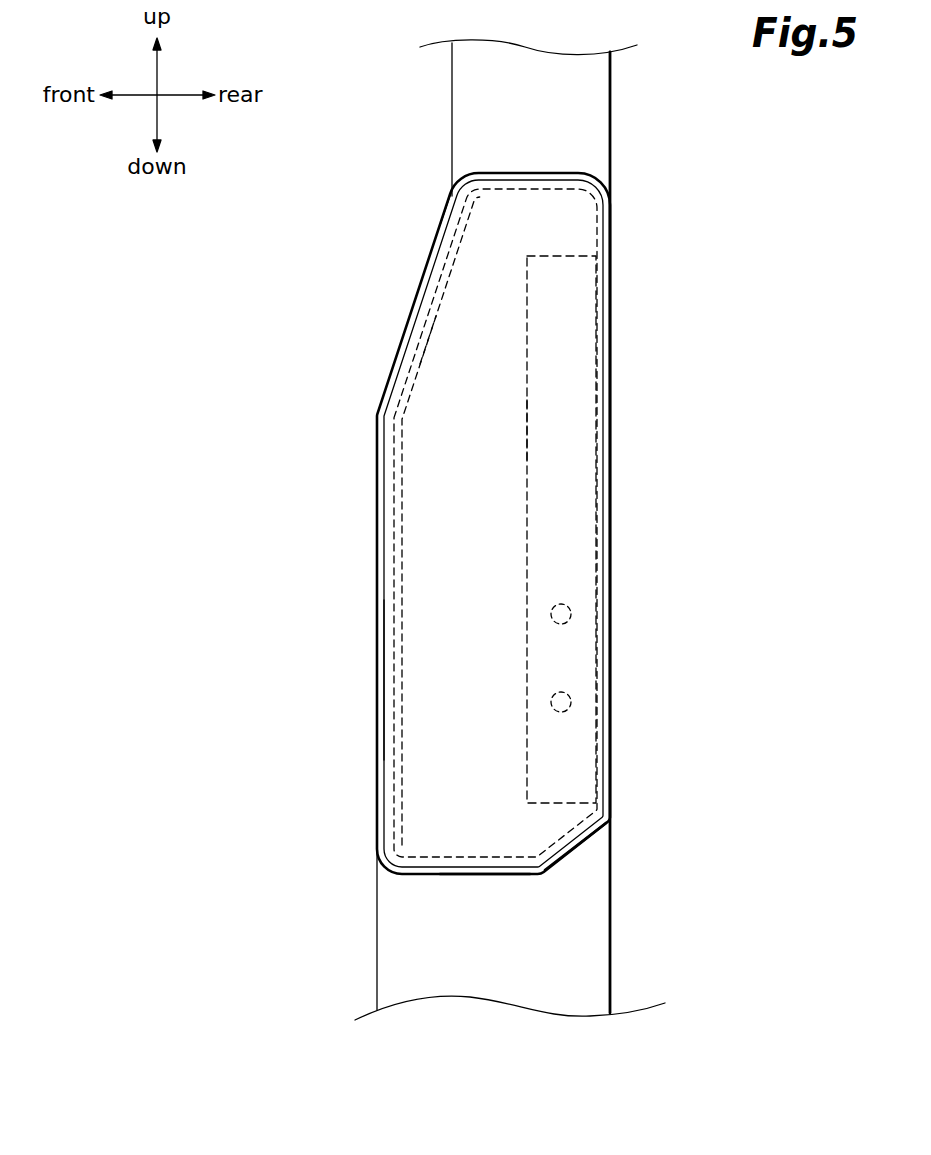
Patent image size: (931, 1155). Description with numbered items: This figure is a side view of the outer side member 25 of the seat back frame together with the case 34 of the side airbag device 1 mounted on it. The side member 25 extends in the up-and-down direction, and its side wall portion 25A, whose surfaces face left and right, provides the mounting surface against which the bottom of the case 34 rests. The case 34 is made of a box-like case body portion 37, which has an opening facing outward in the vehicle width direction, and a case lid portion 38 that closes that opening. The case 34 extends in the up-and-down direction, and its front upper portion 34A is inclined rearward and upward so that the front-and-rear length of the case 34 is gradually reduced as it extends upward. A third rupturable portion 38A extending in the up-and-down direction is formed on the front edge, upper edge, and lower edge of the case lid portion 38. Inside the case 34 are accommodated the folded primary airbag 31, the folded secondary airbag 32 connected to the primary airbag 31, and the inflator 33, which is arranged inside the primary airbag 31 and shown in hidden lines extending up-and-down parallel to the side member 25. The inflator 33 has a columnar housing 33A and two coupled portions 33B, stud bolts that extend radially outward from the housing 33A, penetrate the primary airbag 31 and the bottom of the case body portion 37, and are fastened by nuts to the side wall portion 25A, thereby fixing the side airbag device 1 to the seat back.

The side airbag device 1 is at (568, 173).
The side member 25 is at (596, 958).
The side wall portion 25A is at (480, 989).
The primary airbag 31 is at (437, 306).
The secondary airbag 32 is at (428, 340).
The inflator 33 is at (561, 256).
The housing 33A is at (526, 446).
The coupled portion 33B is at (567, 622).
The case 34 is at (431, 876).
The front upper portion 34A is at (450, 225).
The case body portion 37 is at (573, 849).
The case lid portion 38 is at (427, 688).
The third rupturable portion 38A is at (402, 536).